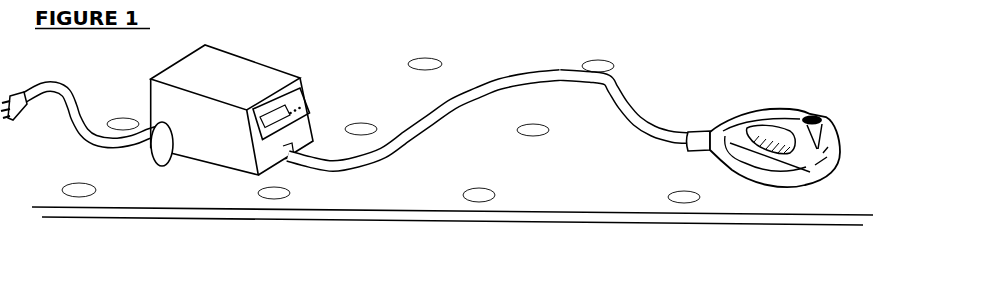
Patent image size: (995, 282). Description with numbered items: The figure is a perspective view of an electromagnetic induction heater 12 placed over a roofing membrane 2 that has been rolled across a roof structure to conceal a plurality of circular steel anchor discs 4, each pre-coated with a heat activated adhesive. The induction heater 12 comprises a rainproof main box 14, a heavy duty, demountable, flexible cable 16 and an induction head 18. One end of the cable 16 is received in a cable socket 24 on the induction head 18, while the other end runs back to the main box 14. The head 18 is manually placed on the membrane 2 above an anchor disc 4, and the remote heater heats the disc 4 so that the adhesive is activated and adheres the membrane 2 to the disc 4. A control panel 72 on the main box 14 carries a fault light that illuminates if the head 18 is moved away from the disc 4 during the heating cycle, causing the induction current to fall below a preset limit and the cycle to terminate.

The membrane 2 is at (413, 221).
The anchor disc 4 is at (548, 132).
The electromagnetic induction heater 12 is at (633, 89).
The main box 14 is at (243, 58).
The flexible cable 16 is at (464, 108).
The induction head 18 is at (745, 112).
The cable socket 24 is at (690, 151).
The control panel 72 is at (293, 100).